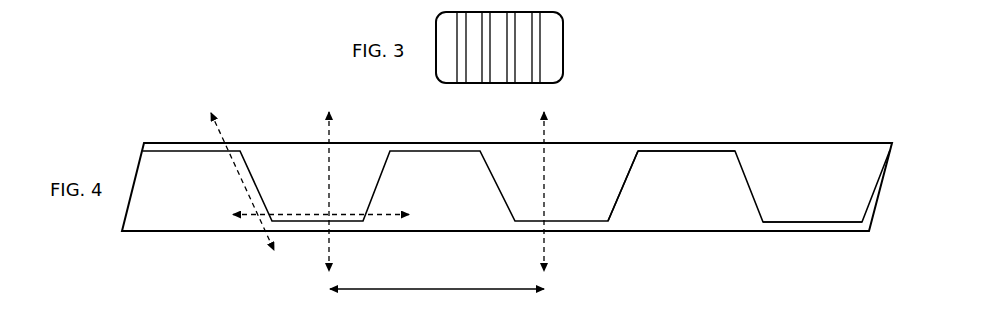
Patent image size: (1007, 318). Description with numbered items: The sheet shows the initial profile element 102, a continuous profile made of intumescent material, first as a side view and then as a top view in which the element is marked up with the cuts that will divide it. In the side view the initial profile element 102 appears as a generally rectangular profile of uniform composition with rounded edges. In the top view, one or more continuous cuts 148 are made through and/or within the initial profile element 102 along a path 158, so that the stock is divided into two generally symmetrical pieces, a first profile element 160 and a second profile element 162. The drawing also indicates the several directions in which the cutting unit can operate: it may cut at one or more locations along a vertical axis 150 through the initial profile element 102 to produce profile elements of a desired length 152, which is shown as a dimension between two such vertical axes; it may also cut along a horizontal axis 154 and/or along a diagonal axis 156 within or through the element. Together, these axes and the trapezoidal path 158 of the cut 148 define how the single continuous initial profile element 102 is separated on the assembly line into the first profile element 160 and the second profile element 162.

In FIG. 3, the initial profile element 102 is at (583, 47).
In FIG. 4, the initial profile element 102 is at (803, 104).
In FIG. 4, the cut 148 is at (662, 151).
In FIG. 4, the vertical axis 150 is at (332, 233).
In FIG. 4, the desired length 152 is at (440, 288).
In FIG. 4, the horizontal axis 154 is at (286, 213).
In FIG. 4, the diagonal axis 156 is at (265, 233).
In FIG. 4, the path 158 is at (784, 222).
In FIG. 4, the first profile element 160 is at (789, 152).
In FIG. 4, the second profile element 162 is at (683, 218).